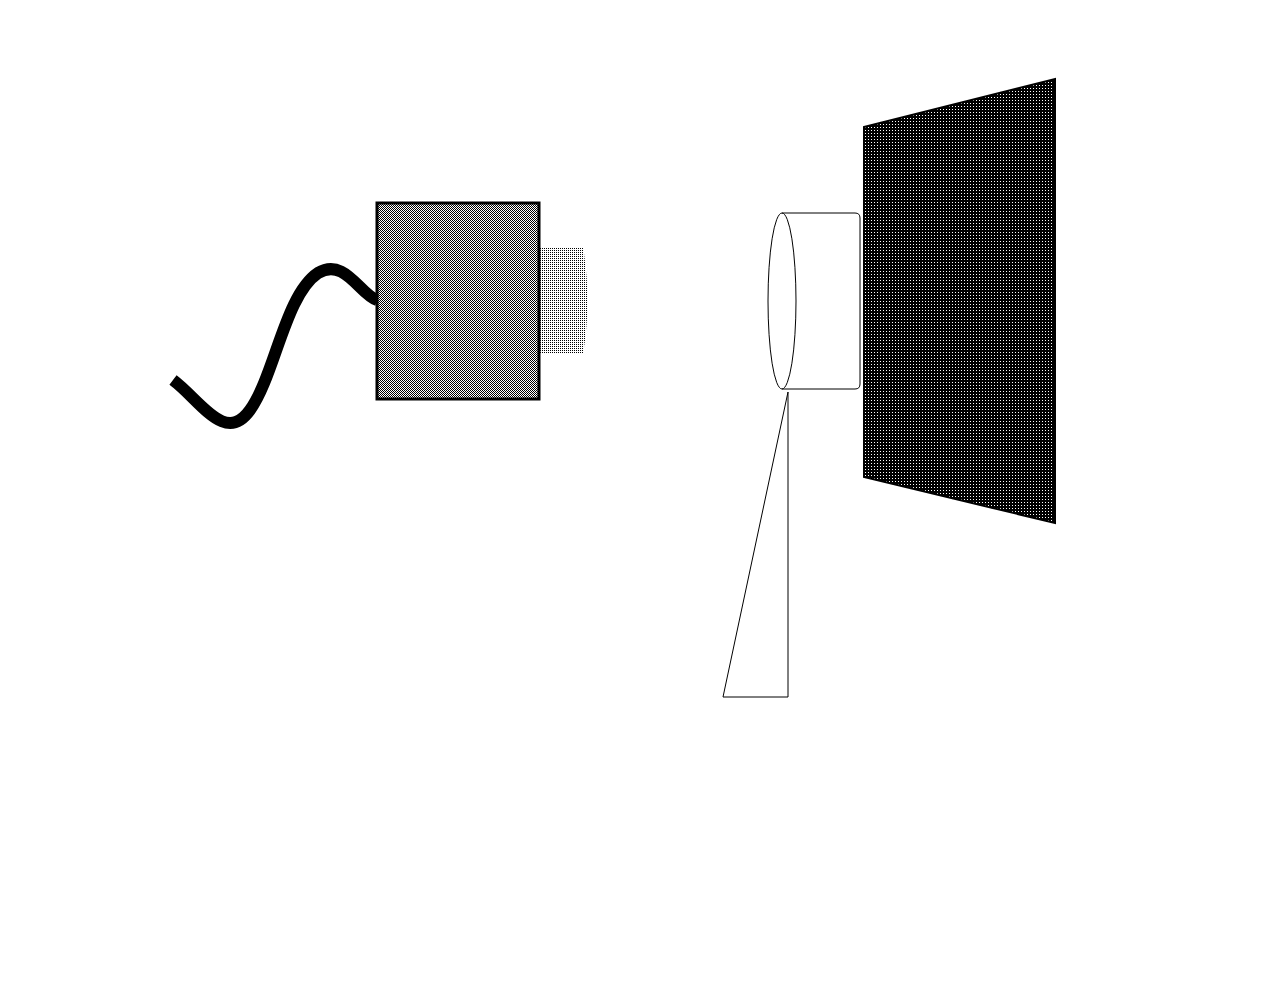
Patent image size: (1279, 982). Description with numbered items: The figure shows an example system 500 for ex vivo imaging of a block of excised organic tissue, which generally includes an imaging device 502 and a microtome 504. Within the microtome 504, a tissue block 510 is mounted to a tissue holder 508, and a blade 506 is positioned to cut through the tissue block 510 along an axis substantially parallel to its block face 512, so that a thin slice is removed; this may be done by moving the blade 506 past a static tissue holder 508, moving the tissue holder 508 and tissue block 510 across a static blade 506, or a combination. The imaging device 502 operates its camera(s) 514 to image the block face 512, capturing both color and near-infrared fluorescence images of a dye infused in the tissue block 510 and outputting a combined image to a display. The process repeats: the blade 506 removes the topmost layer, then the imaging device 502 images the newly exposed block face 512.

The system 500 is at (1146, 86).
The imaging device 502 is at (590, 492).
The microtome 504 is at (1102, 728).
The blade 506 is at (790, 543).
The tissue holder 508 is at (1057, 280).
The tissue block 510 is at (820, 212).
The block face 512 is at (788, 325).
The camera(s) 514 is at (502, 202).